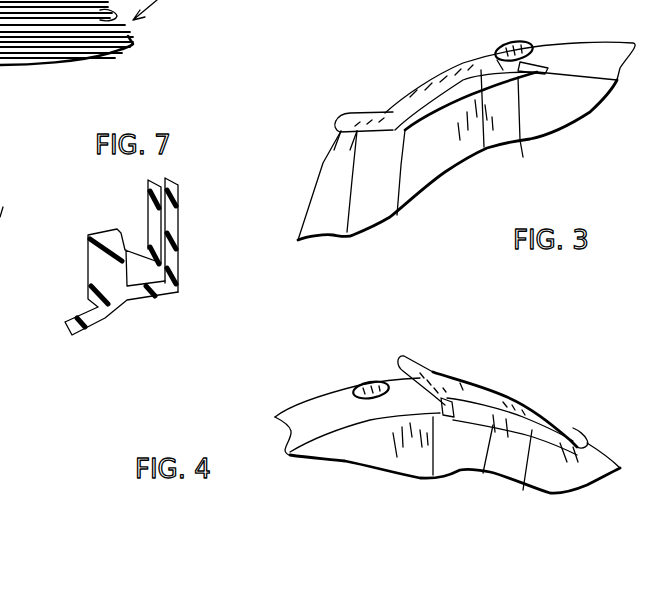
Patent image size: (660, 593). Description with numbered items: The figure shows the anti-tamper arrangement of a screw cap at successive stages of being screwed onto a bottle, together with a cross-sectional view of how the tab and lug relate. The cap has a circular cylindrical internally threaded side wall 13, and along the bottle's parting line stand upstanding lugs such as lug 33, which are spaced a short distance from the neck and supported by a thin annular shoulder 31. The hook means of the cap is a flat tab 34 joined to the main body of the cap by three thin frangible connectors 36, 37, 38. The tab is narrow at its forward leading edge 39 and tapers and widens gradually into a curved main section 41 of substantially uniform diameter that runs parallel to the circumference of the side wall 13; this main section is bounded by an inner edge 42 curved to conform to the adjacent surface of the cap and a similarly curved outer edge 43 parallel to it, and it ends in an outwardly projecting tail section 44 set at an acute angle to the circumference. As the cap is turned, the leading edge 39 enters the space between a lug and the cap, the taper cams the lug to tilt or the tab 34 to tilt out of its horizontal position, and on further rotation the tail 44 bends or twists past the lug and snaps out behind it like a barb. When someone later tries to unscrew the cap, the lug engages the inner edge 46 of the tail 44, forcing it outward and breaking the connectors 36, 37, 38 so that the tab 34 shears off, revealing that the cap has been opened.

In FIG. 3, the side wall 13 is at (435, 143).
In FIG. 4, the side wall 13 is at (352, 447).
In FIG. 3, the shoulder 31 is at (327, 203).
In FIG. 4, the shoulder 31 is at (307, 417).
In FIG. 7, the lug 33 is at (87, 238).
In FIG. 3, the lug 33 is at (510, 42).
In FIG. 4, the lug 33 is at (370, 385).
In FIG. 7, the tab 34 is at (143, 253).
In FIG. 3, the tab 34 is at (417, 99).
In FIG. 4, the tab 34 is at (518, 412).
In FIG. 3, the connector 36 is at (547, 68).
In FIG. 4, the connector 36 is at (568, 478).
In FIG. 3, the connector 37 is at (486, 150).
In FIG. 4, the connector 37 is at (483, 473).
In FIG. 3, the connector 38 is at (397, 215).
In FIG. 4, the connector 38 is at (433, 475).
In FIG. 4, the leading edge 39 is at (584, 443).
In FIG. 3, the main section 41 is at (467, 73).
In FIG. 4, the main section 41 is at (463, 390).
In FIG. 3, the inner edge 42 is at (523, 157).
In FIG. 4, the inner edge 42 is at (523, 490).
In FIG. 3, the outer edge 43 is at (417, 99).
In FIG. 3, the tail section 44 is at (355, 115).
In FIG. 4, the tail section 44 is at (427, 373).
In FIG. 3, the inner edge of tail 46 is at (340, 150).
In FIG. 4, the inner edge of tail 46 is at (420, 384).